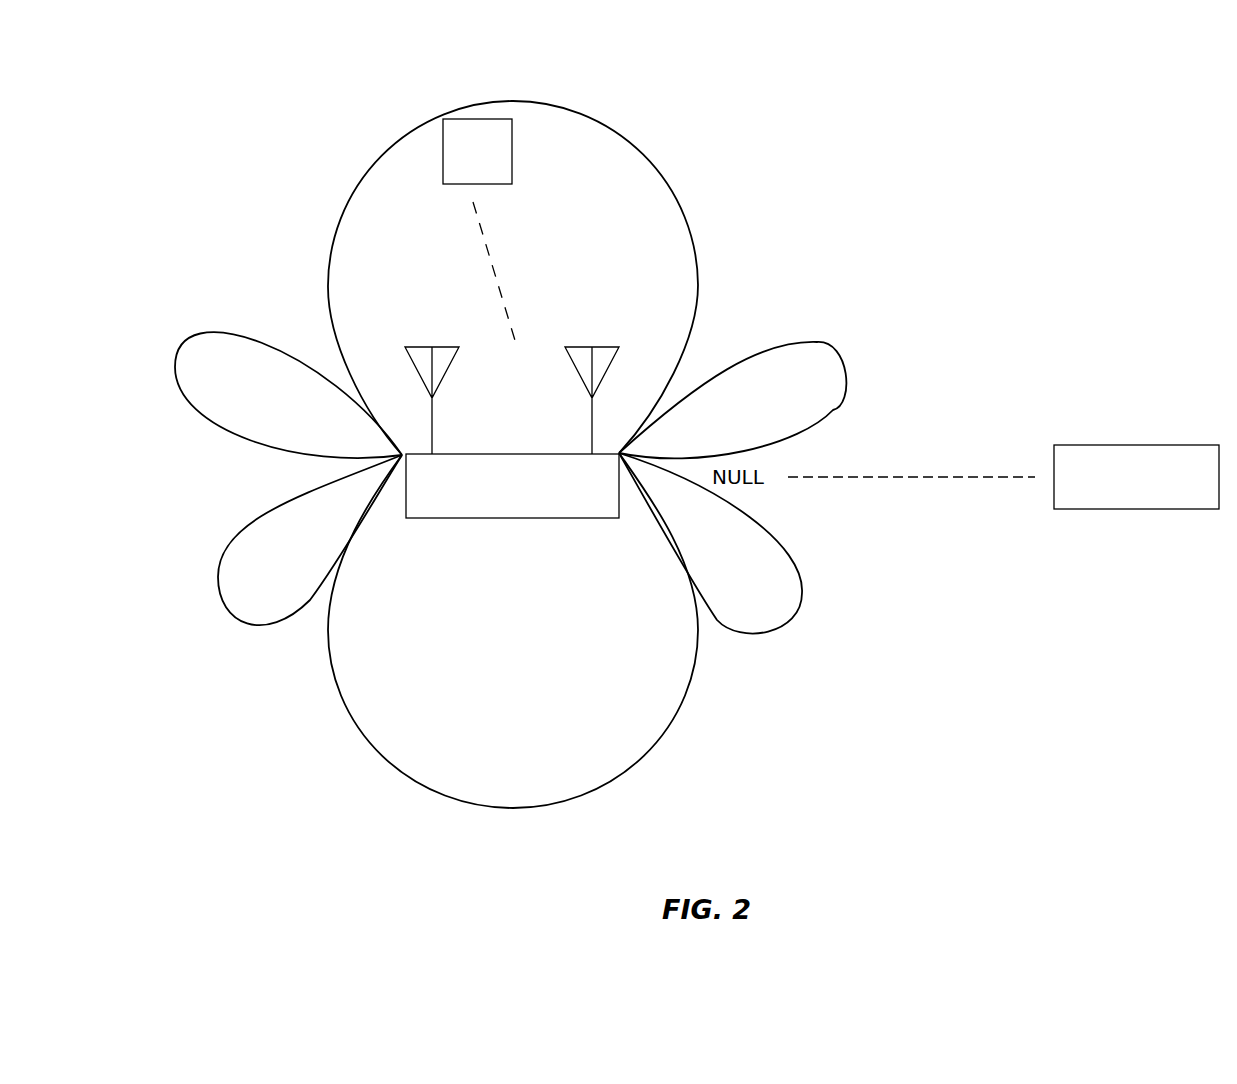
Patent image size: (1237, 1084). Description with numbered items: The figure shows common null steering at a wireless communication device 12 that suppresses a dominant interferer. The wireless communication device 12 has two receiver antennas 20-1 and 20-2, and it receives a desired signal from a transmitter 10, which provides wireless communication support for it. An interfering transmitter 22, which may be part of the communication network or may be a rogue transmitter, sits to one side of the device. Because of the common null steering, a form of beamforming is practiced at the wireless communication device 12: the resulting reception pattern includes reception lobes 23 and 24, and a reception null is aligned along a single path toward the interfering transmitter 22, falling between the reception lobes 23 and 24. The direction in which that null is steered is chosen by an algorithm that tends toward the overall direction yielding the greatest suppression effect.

The transmitter 10 is at (465, 174).
The wireless communication device 12 is at (500, 509).
The receiver antenna 20-1 is at (447, 347).
The receiver antenna 20-2 is at (580, 347).
The interfering transmitter 22 is at (1124, 501).
The reception lobe 23 is at (660, 172).
The reception lobe 24 is at (840, 348).